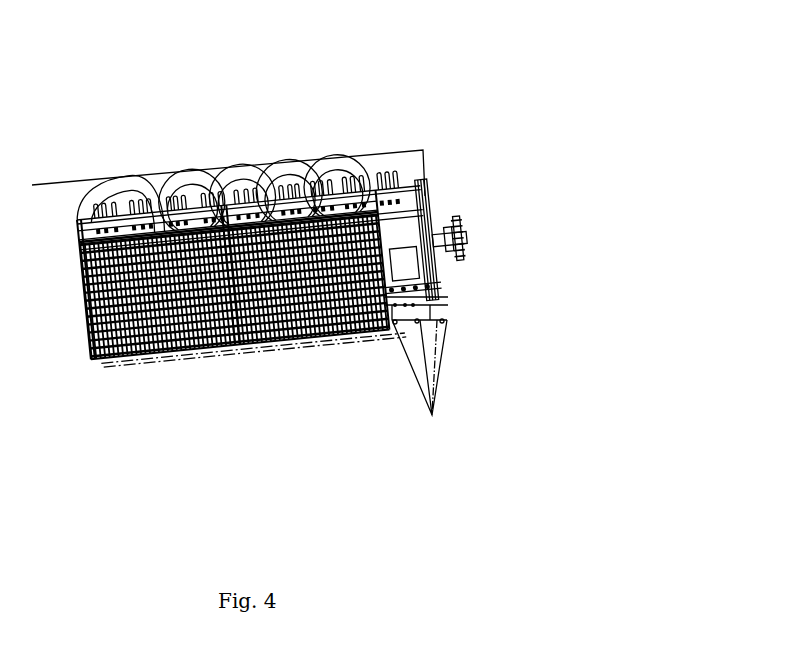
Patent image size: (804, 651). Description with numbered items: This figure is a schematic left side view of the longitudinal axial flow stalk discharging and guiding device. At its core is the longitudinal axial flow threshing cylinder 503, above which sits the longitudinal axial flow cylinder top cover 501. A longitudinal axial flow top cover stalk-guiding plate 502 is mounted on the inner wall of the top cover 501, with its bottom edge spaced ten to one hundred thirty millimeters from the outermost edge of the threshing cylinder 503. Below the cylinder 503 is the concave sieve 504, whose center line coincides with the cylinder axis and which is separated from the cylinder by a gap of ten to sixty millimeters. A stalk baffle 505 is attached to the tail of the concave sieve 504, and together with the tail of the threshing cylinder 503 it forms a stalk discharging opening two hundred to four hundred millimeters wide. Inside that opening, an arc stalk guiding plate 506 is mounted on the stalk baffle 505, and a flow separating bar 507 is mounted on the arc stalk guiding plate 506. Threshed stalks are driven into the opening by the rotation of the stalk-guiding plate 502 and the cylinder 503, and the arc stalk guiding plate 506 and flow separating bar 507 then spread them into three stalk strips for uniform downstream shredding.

The longitudinal axial flow cylinder top cover 501 is at (62, 182).
The longitudinal axial flow top cover stalk-guiding plate 502 is at (187, 177).
The longitudinal axial flow threshing cylinder 503 is at (297, 192).
The concave sieve 504 is at (345, 197).
The stalk baffle 505 is at (390, 345).
The arc stalk guiding plate 506 is at (400, 335).
The flow separating bar 507 is at (412, 345).